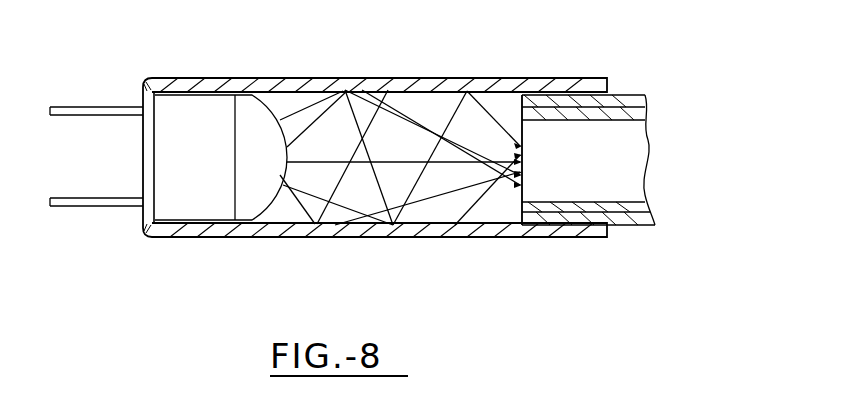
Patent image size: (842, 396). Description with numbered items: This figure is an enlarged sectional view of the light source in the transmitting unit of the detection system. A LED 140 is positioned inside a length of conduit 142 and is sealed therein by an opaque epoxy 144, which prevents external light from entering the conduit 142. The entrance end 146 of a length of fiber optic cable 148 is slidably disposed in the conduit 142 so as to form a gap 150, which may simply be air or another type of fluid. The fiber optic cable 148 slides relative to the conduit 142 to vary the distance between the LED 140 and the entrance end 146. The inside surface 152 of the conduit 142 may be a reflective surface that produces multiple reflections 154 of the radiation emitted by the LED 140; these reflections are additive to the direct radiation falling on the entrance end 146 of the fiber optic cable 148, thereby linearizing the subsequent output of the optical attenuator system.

The LED 140 is at (188, 115).
The conduit 142 is at (394, 92).
The opaque epoxy 144 is at (150, 79).
The entrance end 146 is at (514, 104).
The fiber optic cable 148 is at (648, 136).
The gap 150 is at (365, 203).
The inside surface 152 is at (312, 93).
The multiple reflections 154 is at (448, 205).